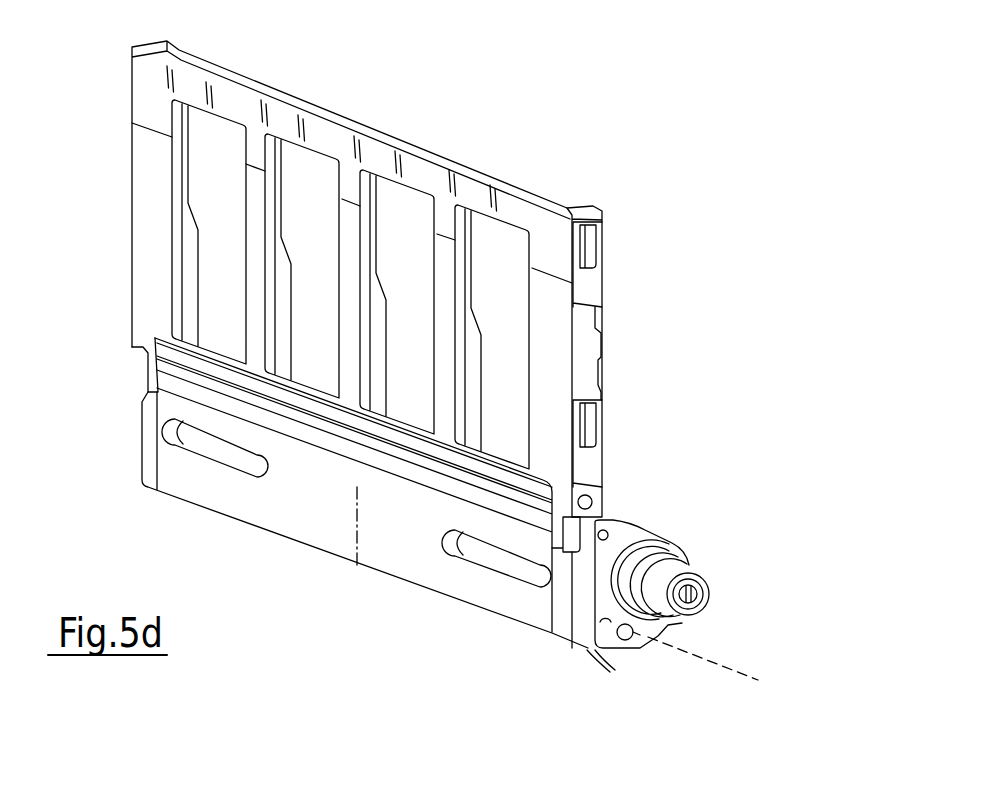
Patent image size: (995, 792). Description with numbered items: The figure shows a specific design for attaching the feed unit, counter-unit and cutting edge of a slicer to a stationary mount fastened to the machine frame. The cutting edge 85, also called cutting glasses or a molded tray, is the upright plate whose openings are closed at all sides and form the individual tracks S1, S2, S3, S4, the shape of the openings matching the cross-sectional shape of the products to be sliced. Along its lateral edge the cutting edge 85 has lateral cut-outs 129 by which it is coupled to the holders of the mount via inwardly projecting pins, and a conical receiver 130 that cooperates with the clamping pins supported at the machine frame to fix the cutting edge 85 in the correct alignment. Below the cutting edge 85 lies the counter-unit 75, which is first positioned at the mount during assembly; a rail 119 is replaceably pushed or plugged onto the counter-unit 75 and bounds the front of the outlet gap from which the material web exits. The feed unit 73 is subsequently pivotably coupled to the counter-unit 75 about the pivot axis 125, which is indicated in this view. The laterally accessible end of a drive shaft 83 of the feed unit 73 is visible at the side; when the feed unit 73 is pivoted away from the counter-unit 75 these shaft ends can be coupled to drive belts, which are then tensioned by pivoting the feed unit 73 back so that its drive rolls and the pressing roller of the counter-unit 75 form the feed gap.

The cutting edge 85 is at (536, 182).
The track S1 is at (235, 203).
The track S2 is at (325, 238).
The track S3 is at (420, 267).
The track S4 is at (515, 303).
The rail 119 is at (205, 378).
The counter-unit 75 is at (396, 551).
The lateral cut-out 129 is at (588, 285).
The conical receiver 130 is at (590, 380).
The feed unit 73 is at (618, 543).
The drive shaft 83 is at (670, 548).
The pivot axis 125 is at (758, 679).